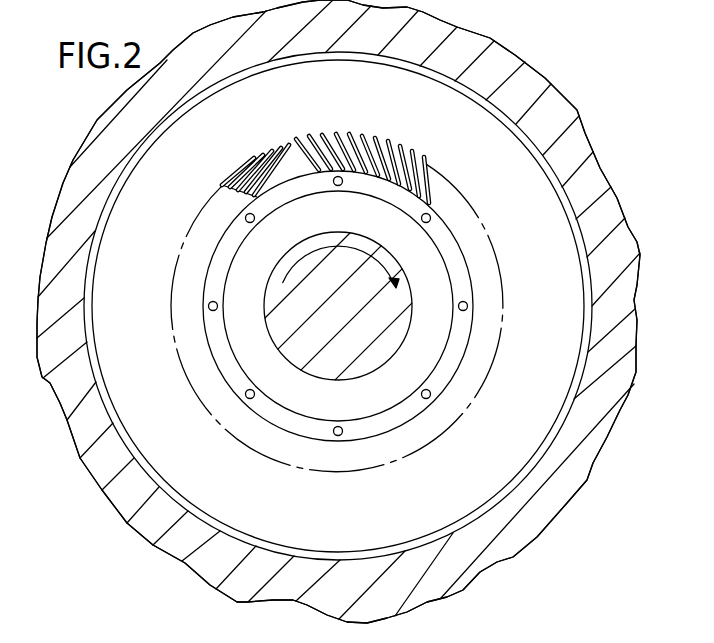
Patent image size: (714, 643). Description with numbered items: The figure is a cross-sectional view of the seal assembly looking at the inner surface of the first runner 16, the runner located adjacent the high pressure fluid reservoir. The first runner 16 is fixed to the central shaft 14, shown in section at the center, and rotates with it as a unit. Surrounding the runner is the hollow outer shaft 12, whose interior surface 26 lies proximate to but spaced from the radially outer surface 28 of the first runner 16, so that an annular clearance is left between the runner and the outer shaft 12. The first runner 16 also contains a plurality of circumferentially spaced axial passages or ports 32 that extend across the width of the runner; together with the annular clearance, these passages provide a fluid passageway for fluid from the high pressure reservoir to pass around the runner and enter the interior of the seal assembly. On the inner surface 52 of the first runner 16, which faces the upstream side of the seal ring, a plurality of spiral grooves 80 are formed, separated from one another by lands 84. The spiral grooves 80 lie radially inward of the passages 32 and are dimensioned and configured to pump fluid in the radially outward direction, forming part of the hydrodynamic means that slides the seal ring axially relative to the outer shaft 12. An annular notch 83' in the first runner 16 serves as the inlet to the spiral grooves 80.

The hollow outer shaft 12 is at (537, 92).
The central shaft 14 is at (350, 318).
The first runner 16 is at (629, 136).
The interior surface 26 is at (257, 67).
The radially outer surface 28 is at (197, 102).
The axial passages 32 is at (341, 186).
The inner surface 52 is at (143, 288).
The spiral grooves 80 is at (240, 188).
The annular notch 83' is at (338, 306).
The lands 84 is at (290, 138).